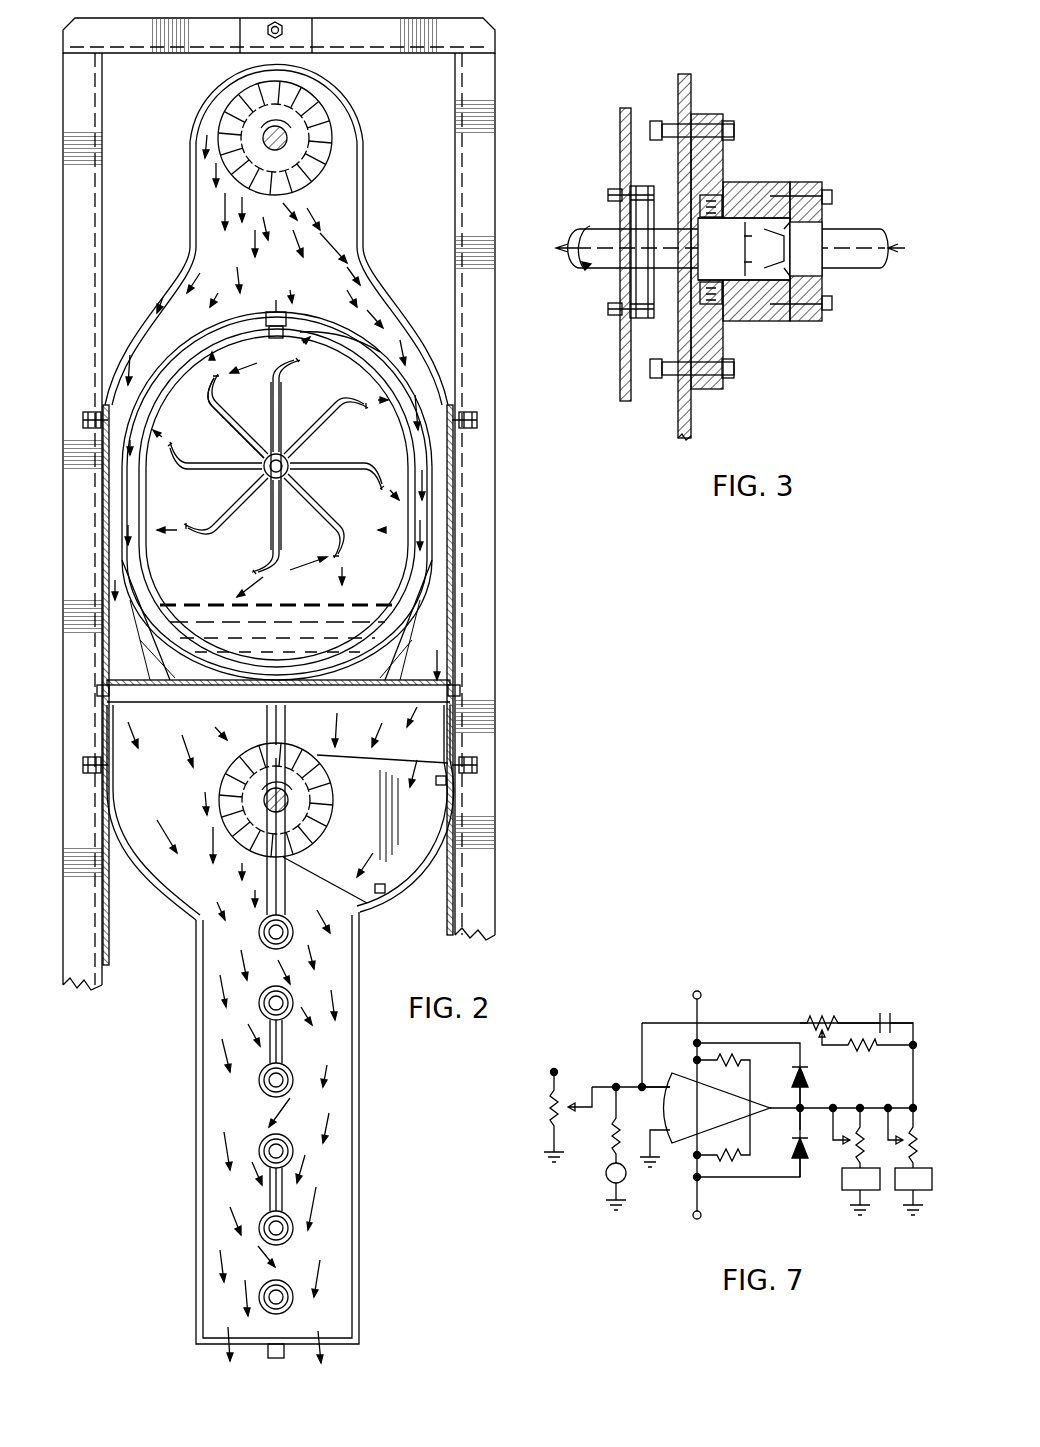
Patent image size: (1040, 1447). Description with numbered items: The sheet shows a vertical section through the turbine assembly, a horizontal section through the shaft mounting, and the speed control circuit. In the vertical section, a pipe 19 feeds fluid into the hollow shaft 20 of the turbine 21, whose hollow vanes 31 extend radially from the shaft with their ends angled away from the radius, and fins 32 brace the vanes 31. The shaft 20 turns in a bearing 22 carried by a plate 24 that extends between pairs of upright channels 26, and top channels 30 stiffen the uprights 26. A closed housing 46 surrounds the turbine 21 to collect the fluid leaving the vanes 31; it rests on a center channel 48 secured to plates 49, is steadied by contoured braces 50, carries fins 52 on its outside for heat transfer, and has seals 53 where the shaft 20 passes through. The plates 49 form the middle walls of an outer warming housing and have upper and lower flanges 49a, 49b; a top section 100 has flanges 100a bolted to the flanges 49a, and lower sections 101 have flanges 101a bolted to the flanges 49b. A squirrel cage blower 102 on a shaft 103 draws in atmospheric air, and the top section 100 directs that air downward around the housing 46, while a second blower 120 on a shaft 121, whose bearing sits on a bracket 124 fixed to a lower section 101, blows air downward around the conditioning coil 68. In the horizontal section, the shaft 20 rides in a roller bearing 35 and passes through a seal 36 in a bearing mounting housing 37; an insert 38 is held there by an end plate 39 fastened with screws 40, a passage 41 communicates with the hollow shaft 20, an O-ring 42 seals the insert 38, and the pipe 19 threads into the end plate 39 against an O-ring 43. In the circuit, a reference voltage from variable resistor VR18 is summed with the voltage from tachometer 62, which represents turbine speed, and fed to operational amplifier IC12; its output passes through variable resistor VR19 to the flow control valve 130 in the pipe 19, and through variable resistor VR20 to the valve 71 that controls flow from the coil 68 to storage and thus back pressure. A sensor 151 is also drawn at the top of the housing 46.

In FIG. 3, the pipe 19 is at (880, 236).
In FIG. 2, the hollow shaft 20 is at (292, 462).
In FIG. 3, the hollow shaft 20 is at (580, 226).
In FIG. 2, the turbine 21 is at (400, 530).
In FIG. 3, the bearing 22 is at (766, 116).
In FIG. 3, the plate 24 is at (690, 86).
In FIG. 2, the upright channel 26 is at (100, 142).
In FIG. 2, the top channel 30 is at (490, 38).
In FIG. 2, the hollow vane 31 is at (215, 405).
In FIG. 2, the fin 32 is at (282, 402).
In FIG. 3, the roller bearing 35 is at (720, 196).
In FIG. 3, the seal 36 is at (742, 215).
In FIG. 3, the bearing mounting housing 37 is at (705, 390).
In FIG. 3, the insert 38 is at (796, 190).
In FIG. 3, the end plate 39 is at (825, 280).
In FIG. 3, the screw 40 is at (833, 196).
In FIG. 3, the passage 41 is at (770, 286).
In FIG. 3, the O-ring 42 is at (745, 286).
In FIG. 3, the O-ring 43 is at (800, 222).
In FIG. 2, the closed housing 46 is at (405, 345).
In FIG. 3, the closed housing 46 is at (622, 130).
In FIG. 2, the center channel 48 is at (455, 696).
In FIG. 2, the plate 49 is at (455, 486).
In FIG. 2, the upper flange 49a is at (90, 414).
In FIG. 2, the lower flange 49b is at (478, 766).
In FIG. 2, the contoured brace 50 is at (430, 627).
In FIG. 2, the fin 52 is at (340, 330).
In FIG. 3, the seal 53 is at (640, 175).
In FIG. 7, the tachometer 62 is at (605, 1180).
In FIG. 2, the conditioning coil 68 is at (262, 932).
In FIG. 7, the valve 71 is at (913, 1179).
In FIG. 2, the top section 100 is at (363, 180).
In FIG. 2, the flange 100a is at (120, 355).
In FIG. 2, the lower section 101 is at (197, 1000).
In FIG. 2, the flange 101a is at (452, 796).
In FIG. 2, the blower 102 is at (330, 152).
In FIG. 2, the shaft 103 is at (287, 136).
In FIG. 2, the blower 120 is at (318, 828).
In FIG. 2, the shaft 121 is at (290, 801).
In FIG. 2, the bracket 124 is at (420, 835).
In FIG. 7, the valve 130 is at (864, 1179).
In FIG. 2, the sensor 151 is at (290, 318).
In FIG. 7, the operational amplifier IC12 is at (765, 1099).
In FIG. 7, the variable resistor VR18 is at (583, 1116).
In FIG. 7, the variable resistor VR19 is at (839, 1161).
In FIG. 7, the variable resistor VR20 is at (934, 1161).